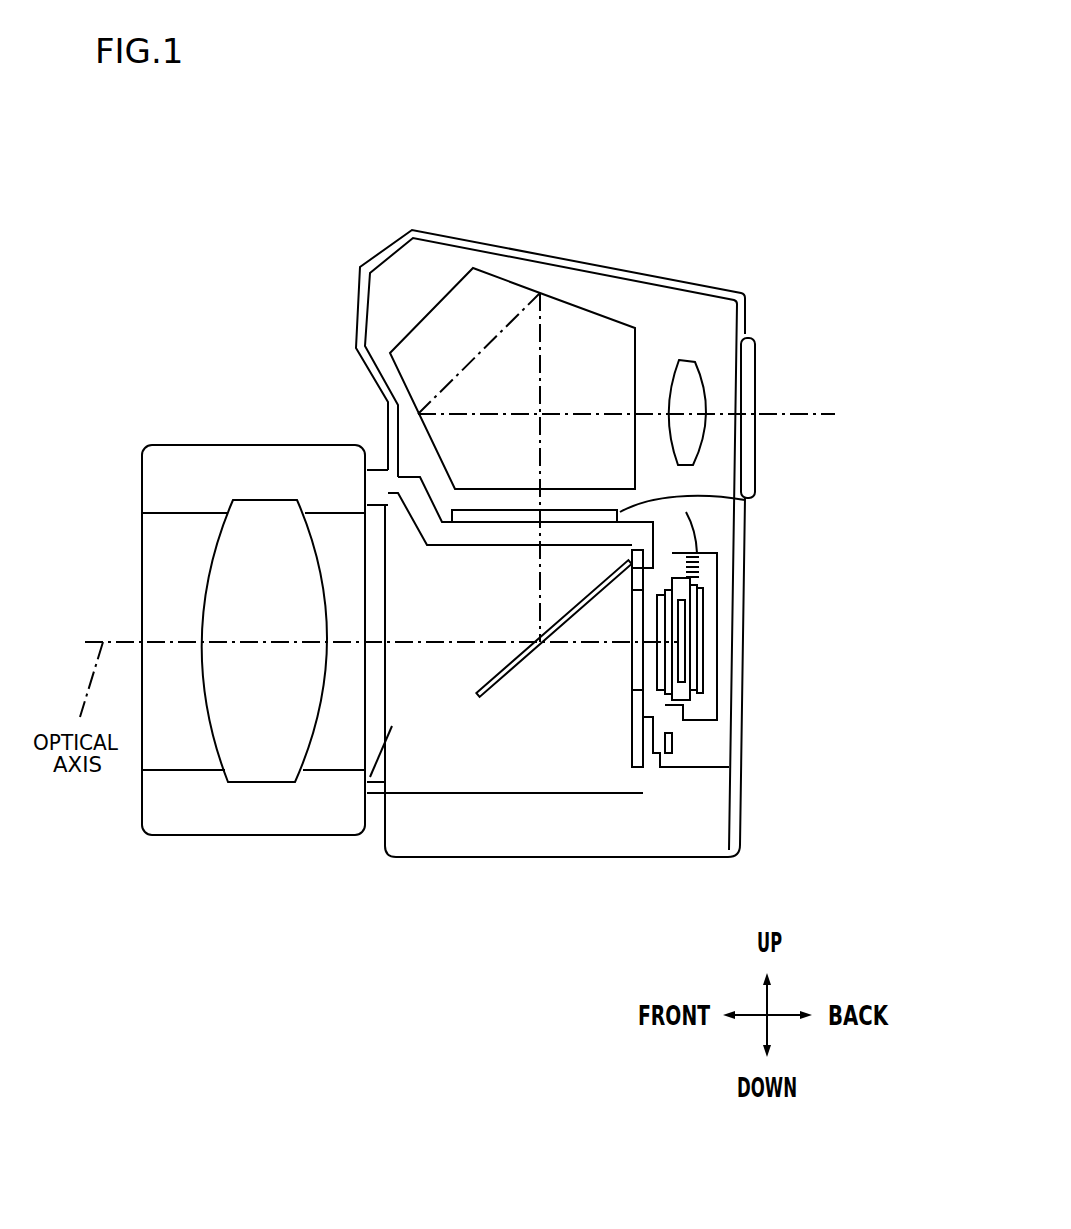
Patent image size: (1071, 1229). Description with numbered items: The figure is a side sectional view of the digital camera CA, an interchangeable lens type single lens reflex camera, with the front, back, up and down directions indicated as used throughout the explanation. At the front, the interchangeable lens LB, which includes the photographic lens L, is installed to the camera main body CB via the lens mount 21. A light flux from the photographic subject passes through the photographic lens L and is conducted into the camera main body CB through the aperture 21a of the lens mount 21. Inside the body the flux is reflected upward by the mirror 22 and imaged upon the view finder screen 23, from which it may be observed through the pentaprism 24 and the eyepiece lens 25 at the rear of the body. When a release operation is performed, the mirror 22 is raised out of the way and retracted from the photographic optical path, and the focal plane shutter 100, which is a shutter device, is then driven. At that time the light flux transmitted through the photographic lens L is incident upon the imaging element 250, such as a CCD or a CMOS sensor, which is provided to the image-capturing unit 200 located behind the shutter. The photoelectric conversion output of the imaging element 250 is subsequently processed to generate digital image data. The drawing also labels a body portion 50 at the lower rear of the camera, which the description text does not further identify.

The digital camera CA is at (792, 139).
The camera main body CB is at (560, 240).
The interchangeable lens LB is at (197, 440).
The photographic lens L is at (275, 773).
The lens mount 21 is at (370, 803).
The aperture 21a is at (392, 726).
The mirror 22 is at (520, 670).
The view finder screen 23 is at (745, 500).
The pentaprism 24 is at (603, 328).
The eyepiece lens 25 is at (694, 362).
The camera body housing 50 is at (708, 828).
The focal plane shutter 100 is at (631, 760).
The image-capturing unit 200 is at (708, 625).
The imaging element 250 is at (680, 698).